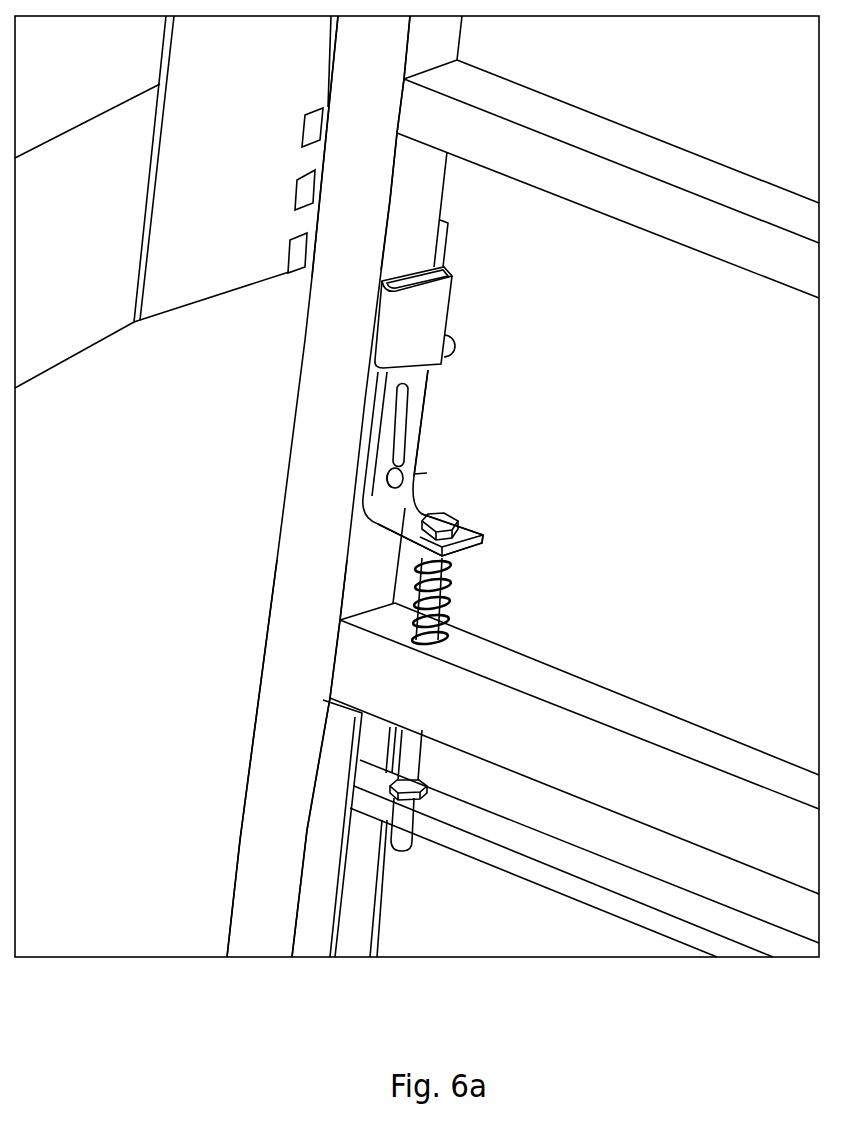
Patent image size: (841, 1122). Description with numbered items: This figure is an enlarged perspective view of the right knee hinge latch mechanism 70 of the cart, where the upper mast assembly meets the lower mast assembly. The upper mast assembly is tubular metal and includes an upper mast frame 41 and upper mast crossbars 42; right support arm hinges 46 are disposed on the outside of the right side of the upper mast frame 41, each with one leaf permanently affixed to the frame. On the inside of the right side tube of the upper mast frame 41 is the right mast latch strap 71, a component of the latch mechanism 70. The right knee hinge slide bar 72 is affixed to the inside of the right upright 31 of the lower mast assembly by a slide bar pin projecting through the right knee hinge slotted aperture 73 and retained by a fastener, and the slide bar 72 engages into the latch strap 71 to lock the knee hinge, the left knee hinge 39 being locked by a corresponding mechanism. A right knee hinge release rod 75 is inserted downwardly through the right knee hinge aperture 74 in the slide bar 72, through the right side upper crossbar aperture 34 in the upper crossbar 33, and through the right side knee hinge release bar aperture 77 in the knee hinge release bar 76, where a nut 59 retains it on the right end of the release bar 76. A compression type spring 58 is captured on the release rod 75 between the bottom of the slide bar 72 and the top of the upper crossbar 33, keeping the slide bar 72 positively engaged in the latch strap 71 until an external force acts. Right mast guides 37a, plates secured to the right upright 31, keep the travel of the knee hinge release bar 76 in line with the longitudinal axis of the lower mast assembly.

The right upright 31 is at (258, 808).
The upper crossbar 33 is at (332, 678).
The right side upper crossbar aperture 34 is at (437, 642).
The right mast guides 37a is at (325, 882).
The left knee hinge 39 is at (452, 340).
The upper mast frame 41 is at (407, 168).
The upper mast crossbars 42 is at (617, 177).
The right support arm hinges 46 is at (262, 270).
The compression type spring 58 is at (445, 585).
The nut 59 is at (425, 798).
The right knee hinge latch mechanism 70 is at (417, 434).
The right mast latch strap 71 is at (388, 340).
The right knee hinge slide bar 72 is at (387, 420).
The right knee hinge slotted aperture 73 is at (388, 448).
The right knee hinge aperture 74 is at (460, 543).
The right knee hinge release rod 75 is at (447, 522).
The knee hinge release bar 76 is at (595, 875).
The right side knee hinge release bar aperture 77 is at (403, 795).